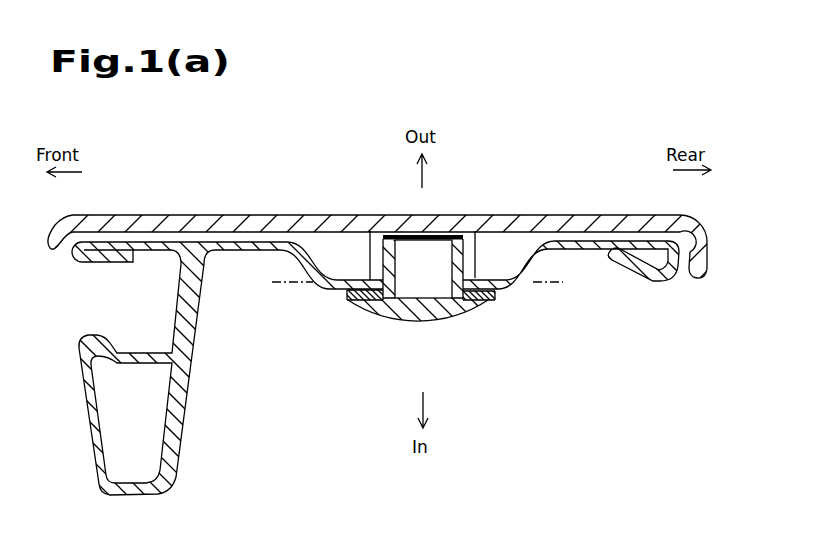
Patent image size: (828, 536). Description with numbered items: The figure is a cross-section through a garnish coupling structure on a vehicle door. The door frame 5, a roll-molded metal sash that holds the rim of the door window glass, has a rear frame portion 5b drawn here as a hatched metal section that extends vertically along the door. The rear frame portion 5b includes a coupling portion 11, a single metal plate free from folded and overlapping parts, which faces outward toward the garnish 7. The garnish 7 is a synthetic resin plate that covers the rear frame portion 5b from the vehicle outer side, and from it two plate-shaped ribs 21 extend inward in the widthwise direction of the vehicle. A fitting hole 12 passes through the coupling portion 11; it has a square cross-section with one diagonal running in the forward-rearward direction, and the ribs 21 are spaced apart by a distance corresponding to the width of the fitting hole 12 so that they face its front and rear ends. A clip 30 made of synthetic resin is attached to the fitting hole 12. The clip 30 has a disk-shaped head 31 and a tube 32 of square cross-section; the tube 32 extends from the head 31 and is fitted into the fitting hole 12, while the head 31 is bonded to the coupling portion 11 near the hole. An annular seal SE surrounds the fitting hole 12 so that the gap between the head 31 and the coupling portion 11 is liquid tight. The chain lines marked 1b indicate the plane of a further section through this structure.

The garnish 7 is at (658, 214).
The coupling portion 11 is at (512, 291).
The door frame 5 is at (414, 268).
The rear frame portion 5b is at (187, 437).
The ribs 21 is at (370, 245).
The tube 32 is at (433, 247).
The clip 30 is at (483, 313).
The head 31 is at (421, 321).
The fitting hole 12 is at (390, 319).
The annular seal SE is at (350, 296).
The section line 1b is at (278, 294).